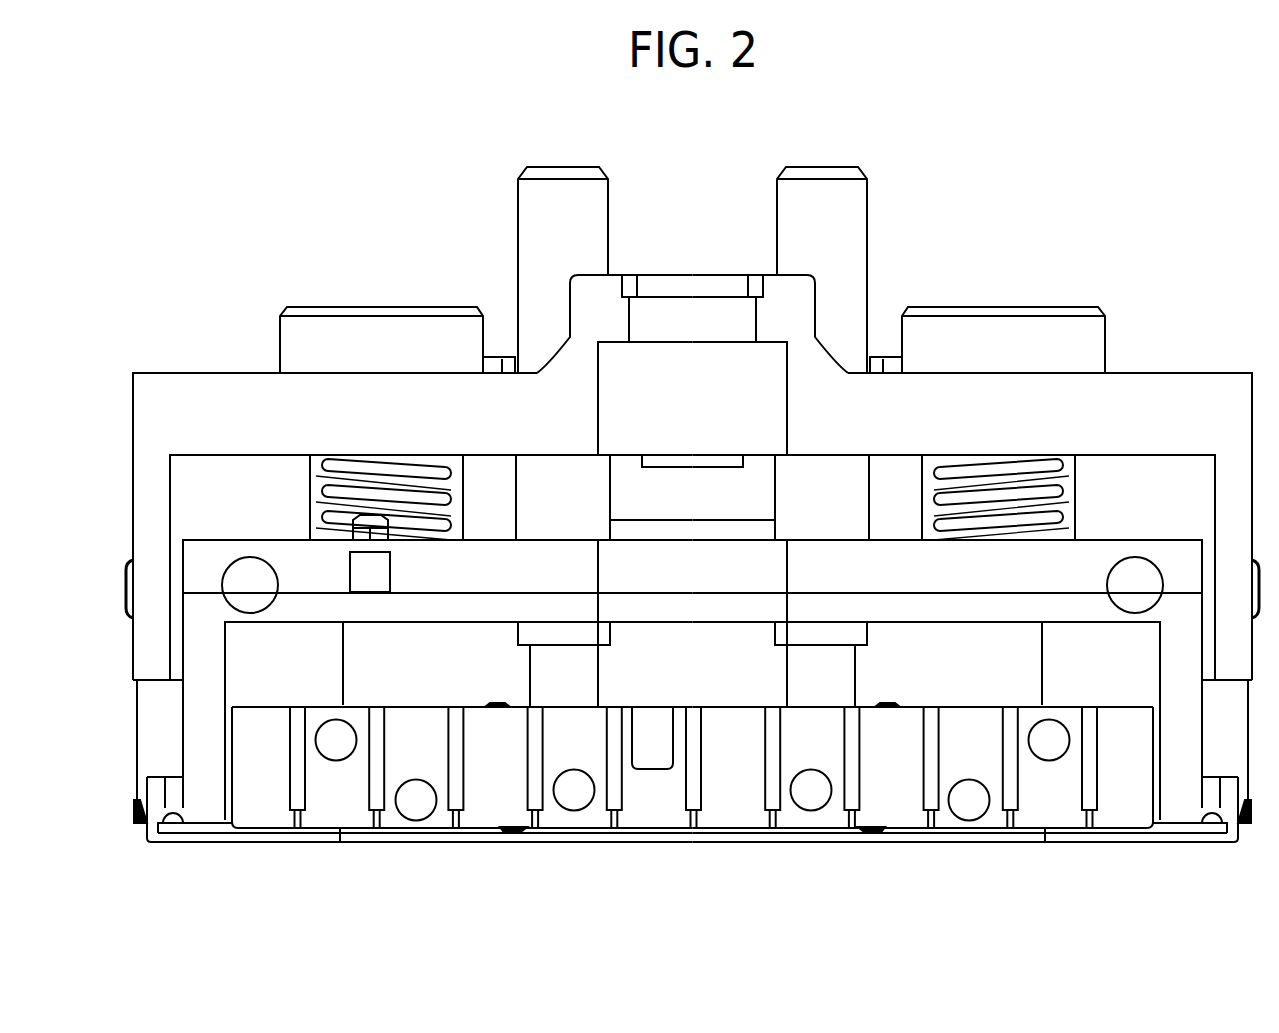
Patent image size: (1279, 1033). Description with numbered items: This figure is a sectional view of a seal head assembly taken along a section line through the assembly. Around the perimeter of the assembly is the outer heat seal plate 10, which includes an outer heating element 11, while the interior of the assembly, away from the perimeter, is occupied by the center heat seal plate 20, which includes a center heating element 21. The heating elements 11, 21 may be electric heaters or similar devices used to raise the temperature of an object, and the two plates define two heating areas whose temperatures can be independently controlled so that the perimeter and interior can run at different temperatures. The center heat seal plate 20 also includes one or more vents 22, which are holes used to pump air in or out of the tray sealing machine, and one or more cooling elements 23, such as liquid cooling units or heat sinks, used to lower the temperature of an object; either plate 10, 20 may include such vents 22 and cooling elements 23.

The outer heat seal plate 10 is at (205, 790).
The outer heating element 11 is at (249, 586).
The center heat seal plate 20 is at (885, 780).
The center heating element 21 is at (417, 800).
The vents 22 is at (298, 827).
The cooling elements 23 is at (338, 750).